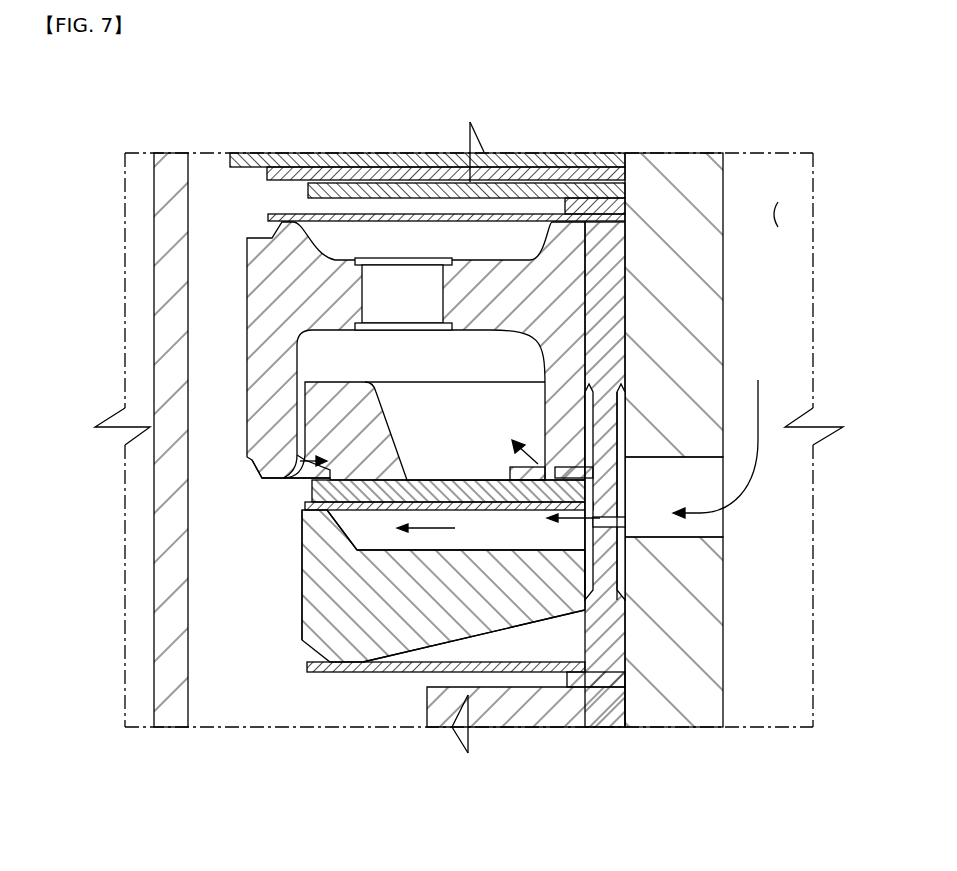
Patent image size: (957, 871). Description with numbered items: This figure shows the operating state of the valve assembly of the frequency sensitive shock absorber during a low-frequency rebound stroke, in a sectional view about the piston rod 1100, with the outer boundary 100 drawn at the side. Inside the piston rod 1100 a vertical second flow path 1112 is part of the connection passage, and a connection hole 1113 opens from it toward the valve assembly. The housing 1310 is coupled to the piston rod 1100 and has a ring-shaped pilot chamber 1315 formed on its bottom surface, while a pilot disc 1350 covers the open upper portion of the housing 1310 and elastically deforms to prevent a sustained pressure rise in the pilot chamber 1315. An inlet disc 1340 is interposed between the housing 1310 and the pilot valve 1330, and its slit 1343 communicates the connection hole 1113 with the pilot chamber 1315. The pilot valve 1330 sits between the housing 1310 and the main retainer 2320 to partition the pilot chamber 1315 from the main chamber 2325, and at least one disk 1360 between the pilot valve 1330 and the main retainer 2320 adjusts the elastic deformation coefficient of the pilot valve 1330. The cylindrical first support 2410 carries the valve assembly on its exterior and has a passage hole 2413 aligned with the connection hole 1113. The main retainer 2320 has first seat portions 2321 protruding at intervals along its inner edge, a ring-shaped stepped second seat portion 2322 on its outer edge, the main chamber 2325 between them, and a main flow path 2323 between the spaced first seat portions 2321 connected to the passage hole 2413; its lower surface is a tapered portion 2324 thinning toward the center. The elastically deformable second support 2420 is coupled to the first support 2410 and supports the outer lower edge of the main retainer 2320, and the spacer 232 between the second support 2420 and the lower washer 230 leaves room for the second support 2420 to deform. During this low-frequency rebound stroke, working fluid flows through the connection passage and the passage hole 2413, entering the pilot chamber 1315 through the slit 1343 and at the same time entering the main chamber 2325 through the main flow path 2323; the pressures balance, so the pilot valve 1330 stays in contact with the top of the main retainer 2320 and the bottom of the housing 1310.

The outer frame 100 is at (160, 212).
The piston rod 1100 is at (675, 176).
The second flow path 1112 is at (774, 214).
The connection hole 1113 is at (696, 522).
The housing 1310 is at (260, 297).
The pilot chamber 1315 is at (340, 358).
The pilot valve 1330 is at (270, 459).
The inlet disc 1340 is at (503, 473).
The slit 1343 is at (573, 468).
The pilot disc 1350 is at (287, 197).
The disk 1360 is at (307, 507).
The first support 2410 is at (610, 259).
The passage hole 2413 is at (745, 502).
The second support 2420 is at (580, 655).
The lower washer 230 is at (602, 710).
The spacer 232 is at (615, 678).
The main retainer 2320 is at (397, 682).
The first seat portion 2321 is at (518, 512).
The second seat portion 2322 is at (300, 530).
The main flow path 2323 is at (446, 669).
The tapered portion 2324 is at (497, 632).
The main chamber 2325 is at (375, 537).